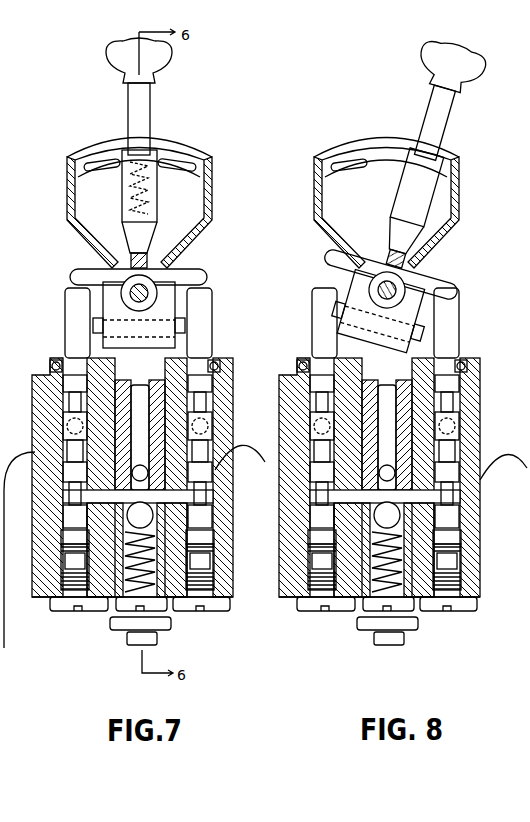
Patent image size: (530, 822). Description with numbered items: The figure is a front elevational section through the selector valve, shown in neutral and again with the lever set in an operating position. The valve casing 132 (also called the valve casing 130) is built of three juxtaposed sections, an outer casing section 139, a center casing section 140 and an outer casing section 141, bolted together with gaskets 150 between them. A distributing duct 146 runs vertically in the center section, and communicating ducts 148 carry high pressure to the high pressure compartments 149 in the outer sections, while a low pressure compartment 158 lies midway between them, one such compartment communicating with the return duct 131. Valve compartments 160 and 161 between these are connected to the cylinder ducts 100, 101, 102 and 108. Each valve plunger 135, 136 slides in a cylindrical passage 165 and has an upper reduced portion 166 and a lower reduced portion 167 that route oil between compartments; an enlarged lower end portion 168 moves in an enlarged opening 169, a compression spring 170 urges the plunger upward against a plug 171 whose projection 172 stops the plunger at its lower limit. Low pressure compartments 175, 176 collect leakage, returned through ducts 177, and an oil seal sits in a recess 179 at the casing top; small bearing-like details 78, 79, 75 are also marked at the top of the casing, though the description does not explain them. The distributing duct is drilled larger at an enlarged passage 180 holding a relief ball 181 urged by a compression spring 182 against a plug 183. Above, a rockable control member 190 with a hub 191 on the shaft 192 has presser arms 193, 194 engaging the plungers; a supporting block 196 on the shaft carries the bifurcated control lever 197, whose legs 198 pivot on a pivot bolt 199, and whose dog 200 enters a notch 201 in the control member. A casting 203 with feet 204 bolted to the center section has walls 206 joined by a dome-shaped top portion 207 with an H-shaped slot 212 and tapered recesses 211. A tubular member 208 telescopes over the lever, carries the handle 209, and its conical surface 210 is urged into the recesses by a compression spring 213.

In FIG. 7, the handle 209 is at (148, 97).
In FIG. 8, the handle 209 is at (440, 105).
In FIG. 7, the tapered recesses 211 is at (130, 147).
In FIG. 8, the tapered recesses 211 is at (345, 148).
In FIG. 7, the conical surface 210 is at (152, 157).
In FIG. 8, the conical surface 210 is at (432, 157).
In FIG. 7, the dome-shaped top portion 207 is at (185, 153).
In FIG. 7, the walls 206 is at (205, 158).
In FIG. 8, the walls 206 is at (378, 192).
In FIG. 7, the casting 203 is at (219, 181).
In FIG. 8, the casting 203 is at (460, 188).
In FIG. 7, the H-shaped slot 212 is at (108, 166).
In FIG. 7, the compression spring 213 is at (150, 178).
In FIG. 7, the notch 201 is at (146, 240).
In FIG. 8, the notch 201 is at (395, 250).
In FIG. 7, the bifurcated control lever 197 is at (150, 250).
In FIG. 7, the dog 200 is at (128, 250).
In FIG. 8, the dog 200 is at (425, 262).
In FIG. 7, the shaft 192 is at (130, 288).
In FIG. 8, the shaft 192 is at (395, 290).
In FIG. 7, the hub 191 is at (145, 288).
In FIG. 7, the presser arm 193 is at (90, 272).
In FIG. 8, the presser arm 193 is at (345, 262).
In FIG. 7, the rockable control member 190 is at (192, 270).
In FIG. 8, the rockable control member 190 is at (443, 282).
In FIG. 7, the presser arm 194 is at (203, 277).
In FIG. 8, the presser arm 194 is at (455, 293).
In FIG. 7, the valve plunger 135 is at (75, 300).
In FIG. 8, the valve plunger 135 is at (310, 298).
In FIG. 7, the valve plunger 136 is at (205, 305).
In FIG. 8, the valve plunger 136 is at (458, 306).
In FIG. 7, the valve casing 130 is at (57, 325).
In FIG. 8, the valve casing 130 is at (301, 314).
In FIG. 7, the pivot bolt 199 is at (80, 308).
In FIG. 8, the legs 198 is at (452, 320).
In FIG. 7, the supporting block 196 is at (176, 322).
In FIG. 8, the supporting block 196 is at (388, 334).
In FIG. 7, the gaskets 150 is at (172, 335).
In FIG. 7, the center casing section 140 is at (192, 372).
In FIG. 8, the center casing section 140 is at (440, 372).
In FIG. 7, the outer casing section 141 is at (214, 360).
In FIG. 8, the outer casing section 141 is at (462, 360).
In FIG. 7, the outer casing section 139 is at (60, 362).
In FIG. 8, the outer casing section 139 is at (305, 364).
In FIG. 7, the bearing ring 78 is at (57, 360).
In FIG. 8, the bearing ring 78 is at (305, 362).
In FIG. 7, the bearing ball 79 is at (54, 364).
In FIG. 7, the bearing race 75 is at (56, 368).
In FIG. 7, the communicating ducts 148 is at (60, 375).
In FIG. 7, the cylinder duct 100 is at (205, 390).
In FIG. 8, the cylinder duct 100 is at (455, 390).
In FIG. 7, the cylinder duct 102 is at (64, 398).
In FIG. 8, the cylinder duct 102 is at (305, 390).
In FIG. 7, the high pressure compartments 149 is at (112, 386).
In FIG. 8, the high pressure compartments 149 is at (460, 378).
In FIG. 7, the cylindrical passage 165 is at (168, 402).
In FIG. 8, the cylindrical passage 165 is at (462, 426).
In FIG. 7, the valve casing 132 is at (58, 424).
In FIG. 8, the valve casing 132 is at (488, 579).
In FIG. 7, the upper reduced portion 166 is at (140, 412).
In FIG. 8, the upper reduced portion 166 is at (452, 447).
In FIG. 7, the low pressure compartment 158 is at (141, 452).
In FIG. 8, the low pressure compartment 158 is at (434, 467).
In FIG. 7, the distributing duct 146 is at (143, 439).
In FIG. 8, the distributing duct 146 is at (388, 438).
In FIG. 7, the valve compartment 160 is at (70, 442).
In FIG. 8, the valve compartment 160 is at (470, 410).
In FIG. 7, the return duct 131 is at (133, 546).
In FIG. 8, the return duct 131 is at (520, 497).
In FIG. 7, the valve compartment 161 is at (62, 470).
In FIG. 8, the valve compartment 161 is at (462, 470).
In FIG. 7, the lower reduced portion 167 is at (66, 482).
In FIG. 8, the lower reduced portion 167 is at (462, 512).
In FIG. 7, the cylinder duct 101 is at (214, 510).
In FIG. 8, the cylinder duct 101 is at (462, 505).
In FIG. 7, the cylinder duct 108 is at (66, 500).
In FIG. 8, the cylinder duct 108 is at (322, 460).
In FIG. 7, the lower end portion 168 is at (62, 536).
In FIG. 7, the enlarged opening 169 is at (62, 578).
In FIG. 7, the compression spring 170 is at (62, 570).
In FIG. 7, the projection 172 is at (139, 561).
In FIG. 8, the projection 172 is at (386, 561).
In FIG. 7, the low pressure compartment 176 is at (62, 590).
In FIG. 8, the low pressure compartment 176 is at (462, 576).
In FIG. 8, the ducts 177 is at (462, 586).
In FIG. 7, the plug 171 is at (72, 605).
In FIG. 8, the plug 171 is at (318, 605).
In FIG. 7, the compression spring 182 is at (120, 585).
In FIG. 8, the compression spring 182 is at (400, 565).
In FIG. 7, the plug 183 is at (160, 605).
In FIG. 7, the ball 181 is at (141, 516).
In FIG. 8, the ball 181 is at (388, 516).
In FIG. 8, the enlarged passage 180 is at (380, 580).
In FIG. 8, the recess 179 is at (425, 350).
In FIG. 8, the low pressure compartment 175 is at (480, 364).
In FIG. 8, the feet 204 is at (345, 350).
In FIG. 8, the tubular member 208 is at (425, 202).